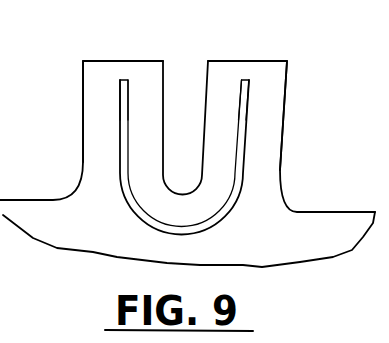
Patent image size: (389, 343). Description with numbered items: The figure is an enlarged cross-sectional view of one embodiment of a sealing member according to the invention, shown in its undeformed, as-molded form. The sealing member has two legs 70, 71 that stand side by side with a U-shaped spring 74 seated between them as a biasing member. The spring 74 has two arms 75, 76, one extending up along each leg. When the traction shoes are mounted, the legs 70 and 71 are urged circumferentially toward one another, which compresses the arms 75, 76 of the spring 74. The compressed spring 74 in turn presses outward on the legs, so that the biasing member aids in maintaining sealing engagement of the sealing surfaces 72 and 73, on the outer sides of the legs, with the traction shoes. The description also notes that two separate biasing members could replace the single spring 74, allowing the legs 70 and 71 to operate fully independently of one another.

The leg 70 is at (93, 148).
The leg 71 is at (270, 152).
The sealing surface 72 is at (83, 88).
The sealing surface 73 is at (287, 98).
The spring 74 is at (223, 215).
The arm 75 is at (128, 90).
The arm 76 is at (242, 90).